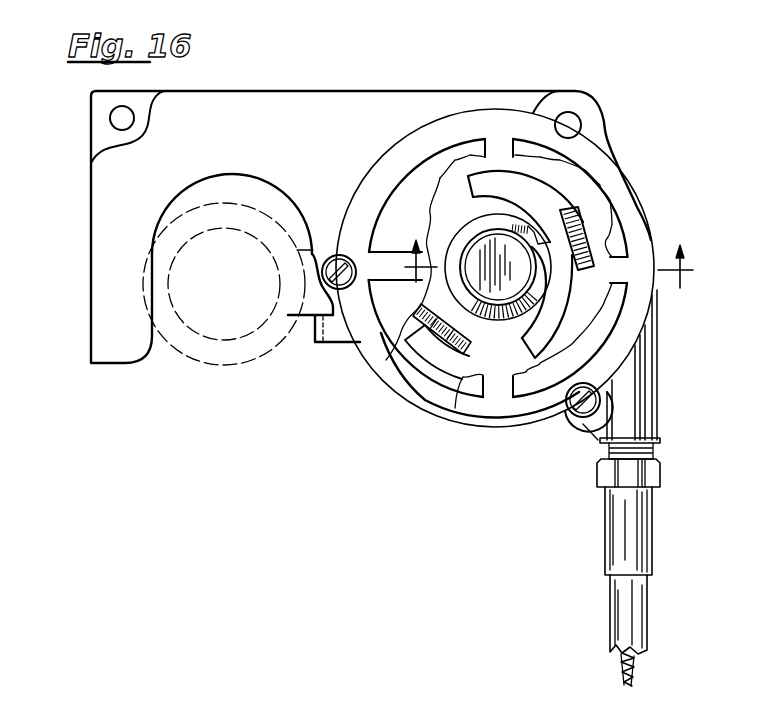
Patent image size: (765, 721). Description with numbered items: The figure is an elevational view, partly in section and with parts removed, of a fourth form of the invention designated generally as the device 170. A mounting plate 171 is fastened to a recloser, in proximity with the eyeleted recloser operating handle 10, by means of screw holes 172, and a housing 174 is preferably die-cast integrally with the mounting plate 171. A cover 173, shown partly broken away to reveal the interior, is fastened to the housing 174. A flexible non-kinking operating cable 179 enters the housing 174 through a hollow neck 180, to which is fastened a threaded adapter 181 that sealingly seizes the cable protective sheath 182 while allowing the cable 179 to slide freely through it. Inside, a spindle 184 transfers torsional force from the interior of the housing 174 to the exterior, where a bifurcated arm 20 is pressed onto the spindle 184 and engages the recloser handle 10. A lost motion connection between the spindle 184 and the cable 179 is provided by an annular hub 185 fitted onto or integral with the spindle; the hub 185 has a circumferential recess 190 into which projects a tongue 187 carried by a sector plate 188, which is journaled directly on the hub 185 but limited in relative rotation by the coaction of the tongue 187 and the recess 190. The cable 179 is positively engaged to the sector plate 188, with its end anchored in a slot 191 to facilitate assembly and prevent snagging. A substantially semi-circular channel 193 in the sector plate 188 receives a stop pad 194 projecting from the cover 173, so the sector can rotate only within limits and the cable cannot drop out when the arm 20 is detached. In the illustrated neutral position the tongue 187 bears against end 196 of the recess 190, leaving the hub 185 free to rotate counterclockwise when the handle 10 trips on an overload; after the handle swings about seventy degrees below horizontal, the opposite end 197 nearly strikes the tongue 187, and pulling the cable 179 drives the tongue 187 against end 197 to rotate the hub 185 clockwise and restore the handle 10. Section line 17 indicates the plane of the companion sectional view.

The operating handle 10 is at (202, 365).
The section line 17 is at (550, 264).
The bifurcated arm 20 is at (337, 318).
The device 170 is at (614, 153).
The mounting plate 171 is at (427, 105).
The screw holes 172 is at (110, 118).
The cover 173 is at (393, 173).
The housing 174 is at (432, 400).
The operating cable 179 is at (636, 672).
The hollow neck 180 is at (636, 369).
The threaded adapter 181 is at (638, 504).
The cable protective sheath 182 is at (630, 598).
The spindle 184 is at (482, 268).
The hub 185 is at (458, 243).
The tongue 187 is at (537, 242).
The sector plate 188 is at (425, 348).
The circumferential recess 190 is at (542, 278).
The slot 191 is at (461, 350).
The semi-circular channel 193 is at (577, 308).
The stop pad 194 is at (592, 236).
The end of recess 196 is at (514, 223).
The end of recess 197 is at (502, 303).